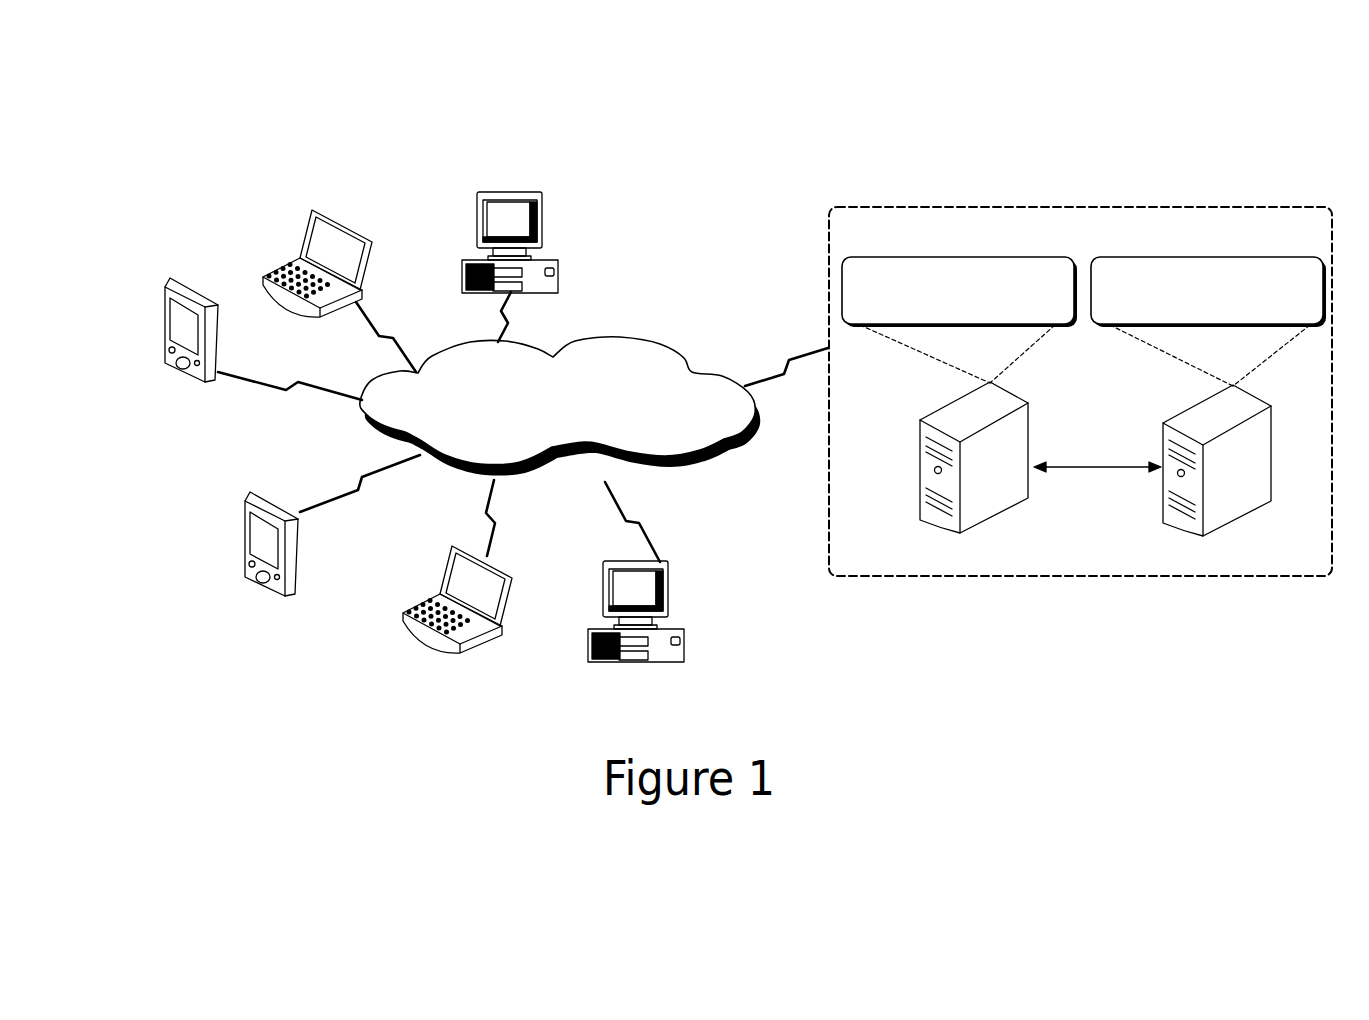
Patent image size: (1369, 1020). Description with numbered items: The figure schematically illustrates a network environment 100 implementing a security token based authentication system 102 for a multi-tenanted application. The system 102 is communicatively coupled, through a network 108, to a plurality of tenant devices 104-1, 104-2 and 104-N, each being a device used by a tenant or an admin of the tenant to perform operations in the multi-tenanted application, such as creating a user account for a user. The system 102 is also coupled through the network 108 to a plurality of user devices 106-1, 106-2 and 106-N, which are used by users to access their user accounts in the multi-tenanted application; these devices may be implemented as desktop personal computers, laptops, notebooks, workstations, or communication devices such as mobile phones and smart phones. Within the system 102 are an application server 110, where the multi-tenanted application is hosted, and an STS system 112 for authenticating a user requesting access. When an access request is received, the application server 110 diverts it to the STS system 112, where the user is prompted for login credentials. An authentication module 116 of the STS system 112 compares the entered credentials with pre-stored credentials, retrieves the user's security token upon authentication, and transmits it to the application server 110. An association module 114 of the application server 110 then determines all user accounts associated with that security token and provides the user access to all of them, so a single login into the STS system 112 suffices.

The network environment 100 is at (681, 108).
The security token based authentication system 102 is at (1074, 200).
The tenant device 104-1 is at (243, 500).
The tenant device 104-2 is at (446, 566).
The tenant device 104-N is at (605, 562).
The user device 106-1 is at (163, 303).
The user device 106-2 is at (312, 212).
The user device 106-N is at (476, 192).
The network 108 is at (560, 406).
The application server 110 is at (945, 406).
The STS system 112 is at (1185, 409).
The association module 114 is at (959, 292).
The authentication module 116 is at (1208, 292).